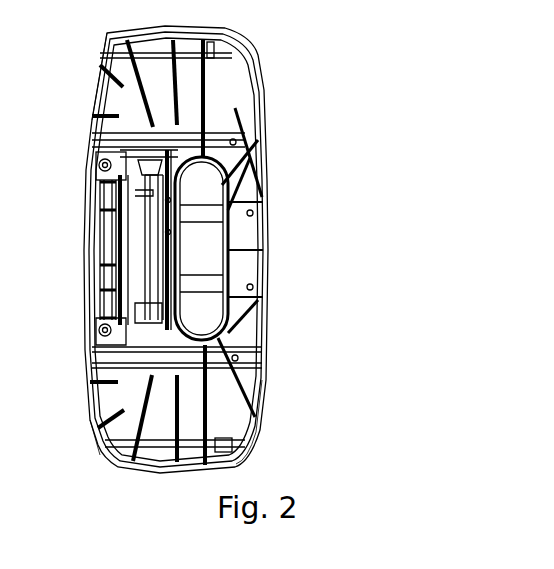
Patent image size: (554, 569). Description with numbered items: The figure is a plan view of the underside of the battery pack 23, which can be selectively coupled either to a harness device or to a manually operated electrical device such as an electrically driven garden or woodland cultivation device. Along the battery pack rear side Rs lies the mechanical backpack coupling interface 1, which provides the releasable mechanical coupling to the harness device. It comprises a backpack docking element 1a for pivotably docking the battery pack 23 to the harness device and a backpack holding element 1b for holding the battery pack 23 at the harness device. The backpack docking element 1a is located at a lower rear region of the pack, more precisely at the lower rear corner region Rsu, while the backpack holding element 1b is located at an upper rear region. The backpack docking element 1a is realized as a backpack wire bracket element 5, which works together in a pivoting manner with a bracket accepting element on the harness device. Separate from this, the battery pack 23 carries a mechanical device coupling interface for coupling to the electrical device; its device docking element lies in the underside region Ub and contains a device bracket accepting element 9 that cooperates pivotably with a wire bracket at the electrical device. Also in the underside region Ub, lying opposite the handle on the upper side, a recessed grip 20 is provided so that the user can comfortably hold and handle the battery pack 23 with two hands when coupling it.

The mechanical backpack coupling interface 1 is at (95, 294).
The backpack docking element 1a is at (97, 317).
The backpack holding element 1b is at (87, 252).
The backpack wire bracket element 5 is at (95, 307).
The device bracket accepting element 9 is at (143, 245).
The recessed grip 20 is at (218, 231).
The battery pack 23 is at (249, 421).
The battery pack rear side Rs is at (85, 147).
The lower rear corner region Rsu is at (90, 337).
The underside region Ub is at (150, 207).